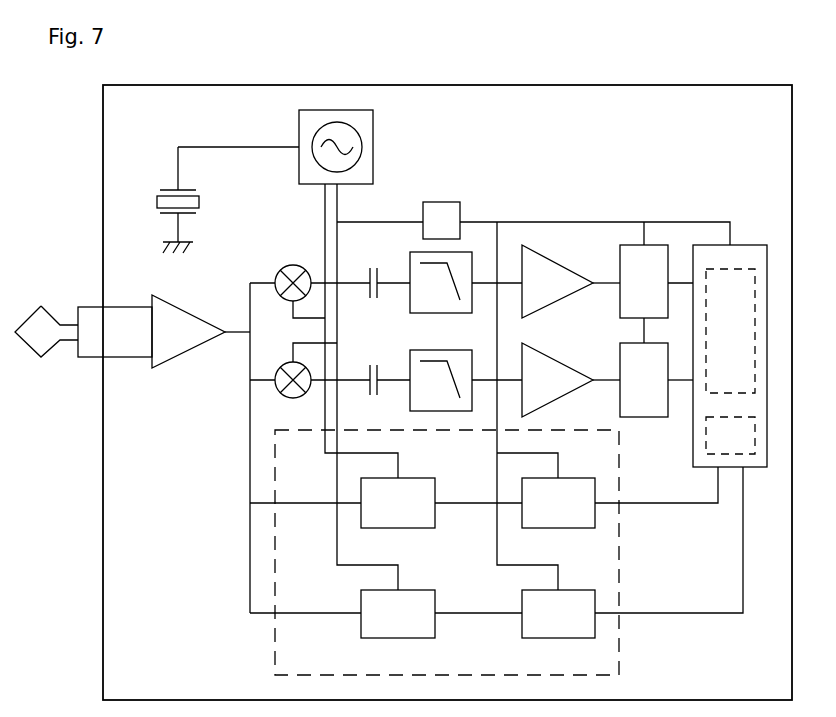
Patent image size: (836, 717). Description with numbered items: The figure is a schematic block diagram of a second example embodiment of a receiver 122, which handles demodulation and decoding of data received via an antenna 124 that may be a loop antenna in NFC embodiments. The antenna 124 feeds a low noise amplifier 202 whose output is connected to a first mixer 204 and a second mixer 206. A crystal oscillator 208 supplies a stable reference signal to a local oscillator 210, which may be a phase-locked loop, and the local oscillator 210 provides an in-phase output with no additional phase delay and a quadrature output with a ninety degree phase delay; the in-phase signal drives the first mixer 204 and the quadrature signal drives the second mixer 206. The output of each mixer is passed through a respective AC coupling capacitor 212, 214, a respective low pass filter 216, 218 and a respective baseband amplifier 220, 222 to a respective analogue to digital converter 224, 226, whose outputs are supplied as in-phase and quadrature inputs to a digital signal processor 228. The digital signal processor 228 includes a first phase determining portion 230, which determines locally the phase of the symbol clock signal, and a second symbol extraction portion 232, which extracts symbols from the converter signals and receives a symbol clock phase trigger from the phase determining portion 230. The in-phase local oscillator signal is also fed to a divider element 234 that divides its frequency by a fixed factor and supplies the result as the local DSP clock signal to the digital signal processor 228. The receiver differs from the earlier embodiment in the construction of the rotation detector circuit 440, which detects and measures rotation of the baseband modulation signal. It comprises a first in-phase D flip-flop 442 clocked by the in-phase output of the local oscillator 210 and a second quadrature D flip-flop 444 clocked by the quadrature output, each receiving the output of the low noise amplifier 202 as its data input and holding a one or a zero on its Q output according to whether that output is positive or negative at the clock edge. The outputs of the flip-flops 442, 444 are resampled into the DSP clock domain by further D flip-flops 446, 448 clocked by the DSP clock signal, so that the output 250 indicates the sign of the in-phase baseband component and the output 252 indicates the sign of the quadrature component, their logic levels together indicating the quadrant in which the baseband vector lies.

The receiver 122 is at (103, 143).
The antenna 124 is at (47, 352).
The low noise amplifier 202 is at (195, 348).
The first mixer 204 is at (291, 264).
The second mixer 206 is at (280, 368).
The crystal oscillator 208 is at (157, 203).
The local oscillator 210 is at (373, 147).
The AC coupling capacitor 212 is at (380, 291).
The AC coupling capacitor 214 is at (380, 388).
The low pass filter 216 is at (423, 313).
The low pass filter 218 is at (430, 411).
The baseband amplifier 220 is at (571, 281).
The baseband amplifier 222 is at (571, 380).
The analogue to digital converter 224 is at (656, 294).
The analogue to digital converter 226 is at (656, 380).
The digital signal processor 228 is at (746, 243).
The first phase determining portion 230 is at (730, 435).
The second symbol extraction portion 232 is at (730, 331).
The divider element 234 is at (441, 200).
The output 250 is at (645, 503).
The output 252 is at (645, 613).
The rotation detector circuit 440 is at (275, 636).
The first in-phase D flip-flop 442 is at (395, 528).
The second quadrature D flip-flop 444 is at (395, 638).
The further D flip-flop 446 is at (545, 528).
The further D flip-flop 448 is at (545, 638).